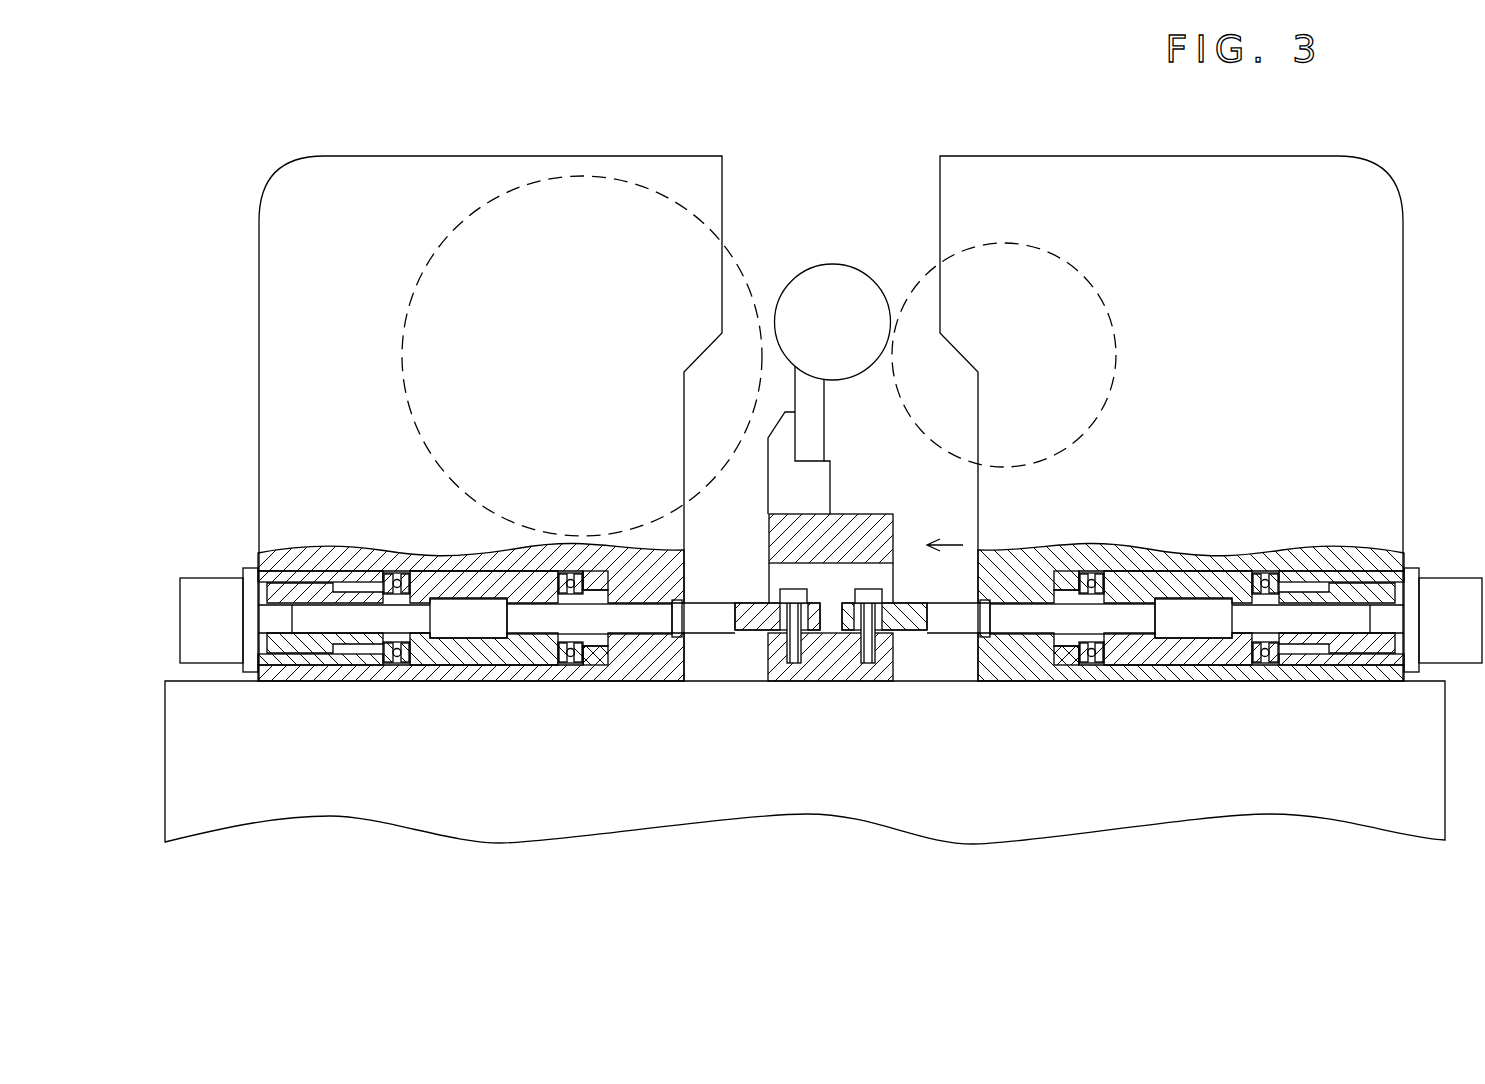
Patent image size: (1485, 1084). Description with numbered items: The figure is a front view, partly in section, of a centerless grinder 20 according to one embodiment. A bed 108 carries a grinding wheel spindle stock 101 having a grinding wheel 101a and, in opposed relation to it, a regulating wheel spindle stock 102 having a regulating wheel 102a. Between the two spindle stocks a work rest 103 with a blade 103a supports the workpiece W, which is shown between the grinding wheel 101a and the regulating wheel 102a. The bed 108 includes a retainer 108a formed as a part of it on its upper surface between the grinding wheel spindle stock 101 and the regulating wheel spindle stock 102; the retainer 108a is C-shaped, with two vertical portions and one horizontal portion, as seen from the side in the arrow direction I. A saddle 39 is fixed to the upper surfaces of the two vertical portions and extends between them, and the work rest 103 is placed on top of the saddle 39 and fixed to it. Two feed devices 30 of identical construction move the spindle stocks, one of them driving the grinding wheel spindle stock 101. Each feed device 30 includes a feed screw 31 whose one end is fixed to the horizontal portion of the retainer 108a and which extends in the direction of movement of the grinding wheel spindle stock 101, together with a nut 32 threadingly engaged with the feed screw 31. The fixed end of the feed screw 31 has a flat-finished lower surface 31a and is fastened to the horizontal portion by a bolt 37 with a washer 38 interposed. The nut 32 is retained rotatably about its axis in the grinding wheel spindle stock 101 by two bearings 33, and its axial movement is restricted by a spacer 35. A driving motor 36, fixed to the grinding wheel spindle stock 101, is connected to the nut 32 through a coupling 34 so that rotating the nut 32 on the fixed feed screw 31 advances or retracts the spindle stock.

The centerless grinder 20 is at (634, 82).
The feed device 30 is at (831, 617).
The feed screw 31 is at (703, 636).
The flat-finished lower surface 31a is at (760, 641).
The nut 32 is at (478, 656).
The bearing 33 is at (397, 672).
The coupling 34 is at (292, 640).
The spacer 35 is at (300, 575).
The driving motor 36 is at (193, 667).
The bolt 37 is at (793, 592).
The washer 38 is at (787, 660).
The saddle 39 is at (895, 524).
The grinding wheel spindle stock 101 is at (348, 226).
The grinding wheel 101a is at (748, 247).
The regulating wheel spindle stock 102 is at (1333, 226).
The regulating wheel 102a is at (937, 290).
The work rest 103 is at (830, 478).
The blade 103a is at (823, 415).
The bed 108 is at (1008, 822).
The retainer 108a is at (828, 690).
The workpiece W is at (832, 272).
The arrow direction I is at (945, 532).